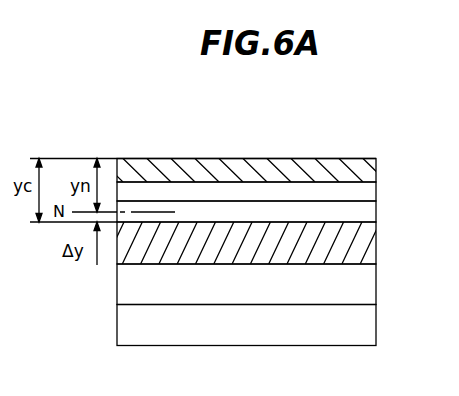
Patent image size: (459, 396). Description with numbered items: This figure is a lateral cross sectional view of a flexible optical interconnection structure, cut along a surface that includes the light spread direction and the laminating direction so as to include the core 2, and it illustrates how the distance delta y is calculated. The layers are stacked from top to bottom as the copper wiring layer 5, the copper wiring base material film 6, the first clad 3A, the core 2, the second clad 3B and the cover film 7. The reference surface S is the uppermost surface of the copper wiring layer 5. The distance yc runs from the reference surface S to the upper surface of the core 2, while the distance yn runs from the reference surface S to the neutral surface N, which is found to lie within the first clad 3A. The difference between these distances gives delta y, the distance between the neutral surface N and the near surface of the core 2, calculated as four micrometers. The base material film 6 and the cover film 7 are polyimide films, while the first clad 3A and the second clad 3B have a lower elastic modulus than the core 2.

The copper wiring layer 5 is at (375, 173).
The copper wiring base material film 6 is at (368, 190).
The first clad 3A is at (368, 210).
The core 2 is at (368, 242).
The second clad 3B is at (368, 290).
The cover film 7 is at (368, 328).
The reference surface S is at (305, 158).